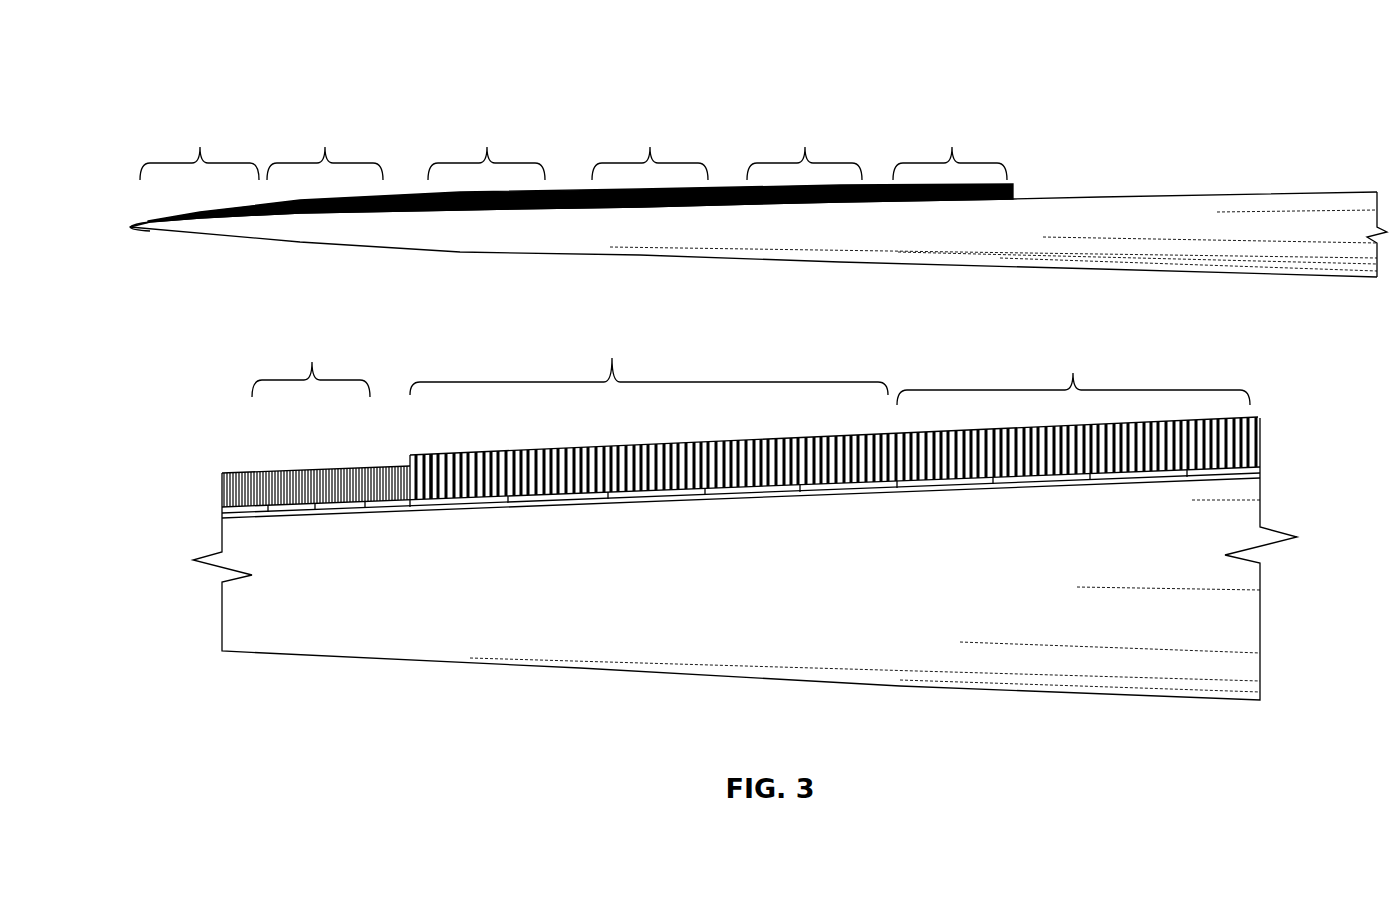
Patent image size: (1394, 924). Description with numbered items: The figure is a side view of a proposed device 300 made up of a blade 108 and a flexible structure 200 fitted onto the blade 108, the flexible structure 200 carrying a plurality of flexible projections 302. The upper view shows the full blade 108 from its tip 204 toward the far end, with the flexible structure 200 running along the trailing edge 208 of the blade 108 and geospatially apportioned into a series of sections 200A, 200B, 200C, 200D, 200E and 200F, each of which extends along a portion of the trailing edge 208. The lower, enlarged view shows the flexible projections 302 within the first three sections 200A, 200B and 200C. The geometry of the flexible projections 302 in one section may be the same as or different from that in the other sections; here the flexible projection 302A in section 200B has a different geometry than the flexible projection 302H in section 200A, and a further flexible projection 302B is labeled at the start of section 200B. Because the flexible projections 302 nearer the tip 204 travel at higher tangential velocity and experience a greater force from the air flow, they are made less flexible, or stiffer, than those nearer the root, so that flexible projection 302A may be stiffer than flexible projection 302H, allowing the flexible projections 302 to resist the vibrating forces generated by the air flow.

The proposed device 300 is at (146, 55).
The blade 108 is at (1145, 254).
The flexible structure 200 is at (165, 213).
The tip 204 is at (128, 229).
The trailing edge 208 is at (1205, 195).
The section 200A is at (199, 152).
The section 200B is at (325, 152).
The section 200C is at (486, 152).
The section 200D is at (650, 152).
The section 200E is at (804, 152).
The section 200F is at (950, 152).
The flexible projections 302 is at (518, 447).
The flexible projection 302A is at (410, 458).
The second bristle 302B is at (432, 455).
The flexible projection 302H is at (395, 469).